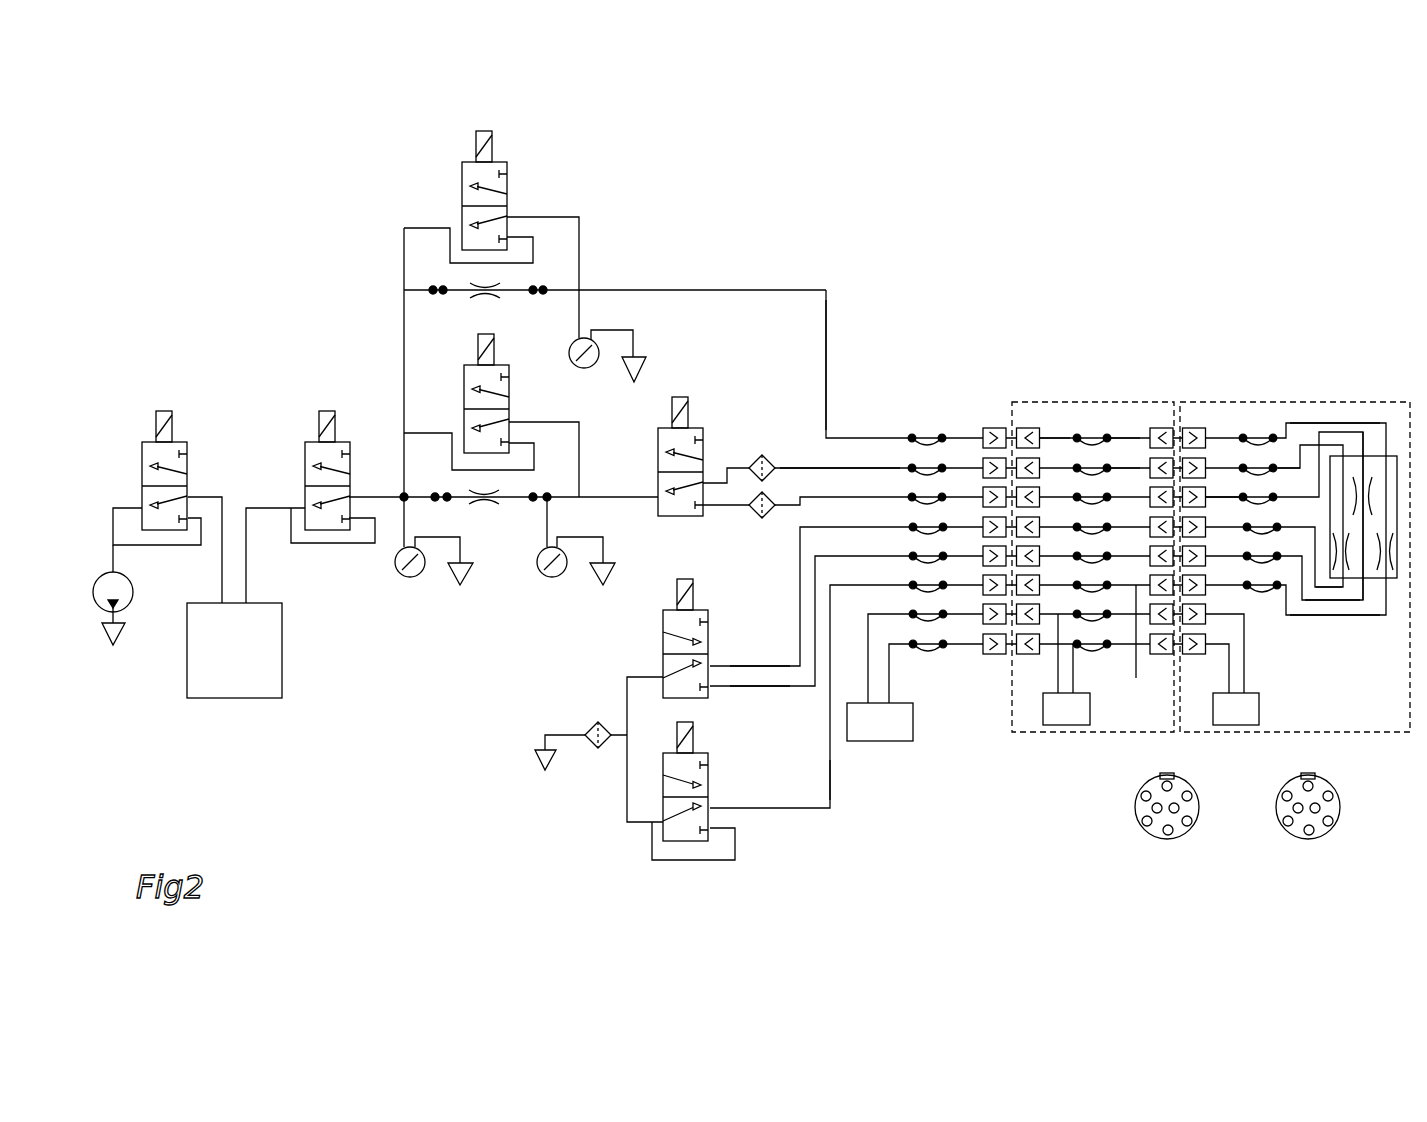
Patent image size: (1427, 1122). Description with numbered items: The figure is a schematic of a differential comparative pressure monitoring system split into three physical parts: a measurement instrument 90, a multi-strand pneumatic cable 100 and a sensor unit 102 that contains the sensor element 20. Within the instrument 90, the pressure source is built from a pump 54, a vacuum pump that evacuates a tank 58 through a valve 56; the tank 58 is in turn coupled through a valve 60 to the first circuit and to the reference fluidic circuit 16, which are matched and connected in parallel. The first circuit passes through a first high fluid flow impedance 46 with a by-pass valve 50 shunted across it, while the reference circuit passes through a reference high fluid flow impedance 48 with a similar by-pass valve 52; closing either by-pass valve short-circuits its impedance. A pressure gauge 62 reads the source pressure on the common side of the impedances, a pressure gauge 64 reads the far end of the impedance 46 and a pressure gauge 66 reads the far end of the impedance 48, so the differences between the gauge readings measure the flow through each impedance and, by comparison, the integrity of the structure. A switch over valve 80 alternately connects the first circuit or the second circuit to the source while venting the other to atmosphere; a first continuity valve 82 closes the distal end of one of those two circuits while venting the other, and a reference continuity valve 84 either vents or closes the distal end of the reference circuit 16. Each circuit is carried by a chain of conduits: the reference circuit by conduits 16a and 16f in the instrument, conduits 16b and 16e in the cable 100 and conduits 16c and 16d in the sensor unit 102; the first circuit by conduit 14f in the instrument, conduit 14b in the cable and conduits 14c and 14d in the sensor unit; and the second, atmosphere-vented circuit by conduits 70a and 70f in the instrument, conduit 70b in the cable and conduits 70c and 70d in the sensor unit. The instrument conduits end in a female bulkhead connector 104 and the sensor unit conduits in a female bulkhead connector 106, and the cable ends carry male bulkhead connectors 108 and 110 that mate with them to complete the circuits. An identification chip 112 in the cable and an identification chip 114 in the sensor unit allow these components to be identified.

The conduit 14b is at (1213, 497).
The conduit 14c is at (1363, 445).
The conduit 14d is at (1350, 602).
The conduit 14f is at (765, 687).
The reference fluidic circuit 16 is at (1057, 432).
The conduit 16a is at (826, 352).
The conduit 16b is at (1118, 437).
The conduit 16c is at (1327, 423).
The conduit 16d is at (1303, 618).
The conduit 16e is at (1143, 648).
The conduit 16f is at (836, 782).
The sensor element 20 is at (1397, 512).
The first high fluid flow impedance 46 is at (463, 490).
The reference high fluid flow impedance 48 is at (460, 283).
The by-pass valve 50 is at (463, 373).
The by-pass valve 52 is at (498, 158).
The pump 54 is at (135, 595).
The valve 56 is at (152, 442).
The tank 58 is at (237, 698).
The valve 60 is at (300, 442).
The pressure gauge 62 is at (395, 562).
The pressure gauge 64 is at (537, 562).
The pressure gauge 66 is at (598, 348).
The conduit 70a is at (845, 468).
The conduit 70b is at (1127, 468).
The conduit 70c is at (1288, 466).
The conduit 70d is at (1323, 589).
The conduit 70f is at (790, 667).
The switch over valve 80 is at (703, 433).
The first continuity valve 82 is at (663, 642).
The reference continuity valve 84 is at (663, 777).
The measurement instrument 90 is at (847, 165).
The multi-strand pneumatic cable 100 is at (1103, 735).
The sensor unit 102 is at (1373, 732).
The female bulkhead connector 104 is at (988, 393).
The female bulkhead connector 106 is at (1202, 400).
The male bulkhead connector 108 is at (1027, 398).
The male bulkhead connector 110 is at (1161, 528).
The identification chip 112 is at (1055, 725).
The identification chip 114 is at (1235, 725).